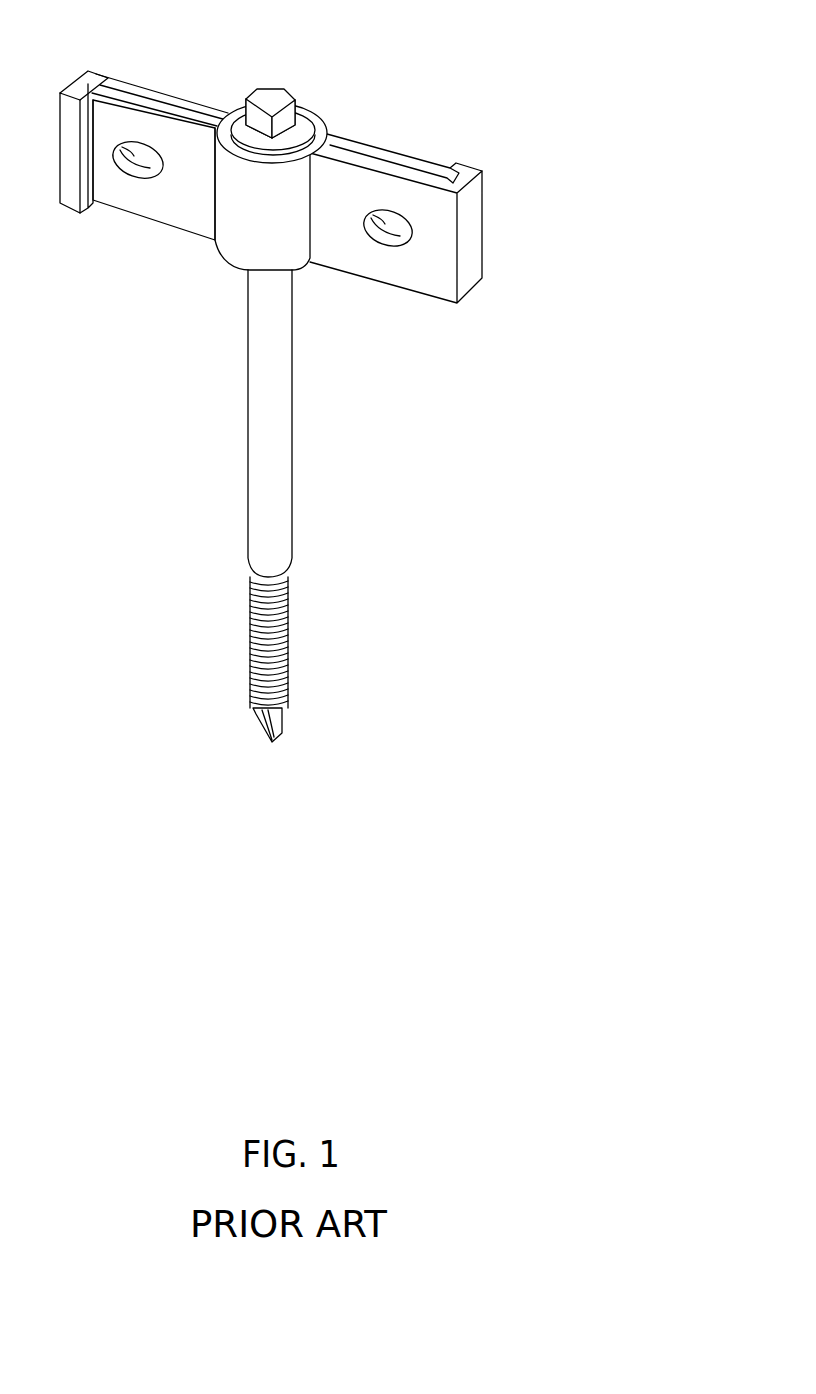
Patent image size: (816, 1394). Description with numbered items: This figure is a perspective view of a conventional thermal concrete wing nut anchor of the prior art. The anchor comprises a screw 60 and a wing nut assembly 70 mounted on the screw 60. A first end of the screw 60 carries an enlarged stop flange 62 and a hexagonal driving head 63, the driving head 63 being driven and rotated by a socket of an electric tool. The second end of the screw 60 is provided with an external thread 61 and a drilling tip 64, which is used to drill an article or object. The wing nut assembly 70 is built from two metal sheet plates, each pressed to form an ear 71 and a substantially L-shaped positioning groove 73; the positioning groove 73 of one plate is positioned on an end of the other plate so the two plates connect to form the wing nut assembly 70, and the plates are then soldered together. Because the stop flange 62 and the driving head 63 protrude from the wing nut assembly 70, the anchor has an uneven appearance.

The screw 60 is at (258, 398).
The external thread 61 is at (280, 630).
The enlarged stop flange 62 is at (242, 121).
The hexagonal driving head 63 is at (269, 100).
The drilling tip 64 is at (263, 723).
The wing nut assembly 70 is at (271, 381).
The ear 71 is at (233, 240).
The substantially L-shaped positioning groove 73 is at (86, 92).